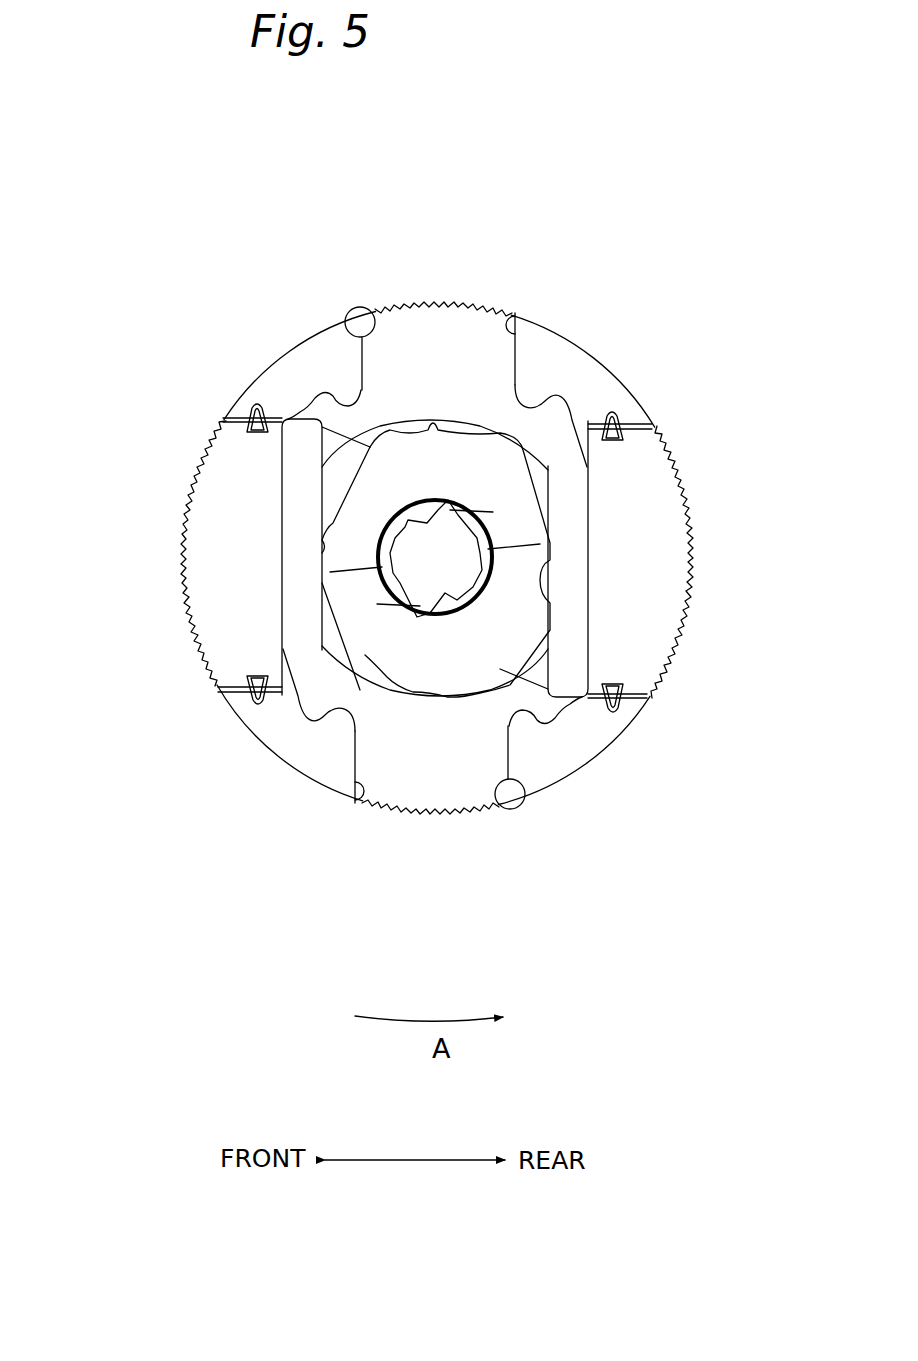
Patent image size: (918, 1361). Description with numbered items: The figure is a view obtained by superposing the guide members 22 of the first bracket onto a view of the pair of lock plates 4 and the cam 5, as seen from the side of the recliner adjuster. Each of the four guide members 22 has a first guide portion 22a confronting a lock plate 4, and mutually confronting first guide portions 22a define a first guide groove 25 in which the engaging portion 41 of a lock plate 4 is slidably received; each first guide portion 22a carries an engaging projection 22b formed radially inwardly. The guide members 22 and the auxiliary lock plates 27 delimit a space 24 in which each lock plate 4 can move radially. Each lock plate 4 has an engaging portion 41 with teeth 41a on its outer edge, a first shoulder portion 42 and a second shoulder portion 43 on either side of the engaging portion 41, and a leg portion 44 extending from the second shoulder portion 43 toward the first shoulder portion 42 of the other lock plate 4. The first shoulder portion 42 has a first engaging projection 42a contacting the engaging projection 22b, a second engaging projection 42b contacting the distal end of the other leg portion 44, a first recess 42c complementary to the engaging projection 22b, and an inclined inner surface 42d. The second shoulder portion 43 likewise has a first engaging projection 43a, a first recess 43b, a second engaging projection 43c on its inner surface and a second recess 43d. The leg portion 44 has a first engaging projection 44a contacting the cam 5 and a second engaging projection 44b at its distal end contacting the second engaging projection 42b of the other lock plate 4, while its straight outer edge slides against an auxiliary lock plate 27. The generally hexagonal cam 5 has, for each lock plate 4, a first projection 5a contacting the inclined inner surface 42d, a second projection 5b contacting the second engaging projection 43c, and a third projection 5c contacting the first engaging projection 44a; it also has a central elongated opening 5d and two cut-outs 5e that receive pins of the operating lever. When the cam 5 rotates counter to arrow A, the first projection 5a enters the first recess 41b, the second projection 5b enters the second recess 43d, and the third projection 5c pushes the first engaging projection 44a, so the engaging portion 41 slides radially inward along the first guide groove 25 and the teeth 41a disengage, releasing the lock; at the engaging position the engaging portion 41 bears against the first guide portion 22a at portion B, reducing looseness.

The lock plate 4 is at (372, 303).
The cam 5 is at (593, 487).
The first projection 5a is at (395, 445).
The second projection 5b is at (488, 445).
The third projection 5c is at (345, 548).
The elongated opening 5d is at (320, 577).
The cut-outs 5e is at (322, 600).
The guide member 22 is at (318, 320).
The first guide portion 22a is at (352, 308).
The engaging projection 22b is at (300, 370).
The space 24 is at (370, 497).
The first guide groove 25 is at (541, 313).
The auxiliary lock plate 27 is at (213, 652).
The engaging portion 41 is at (428, 342).
The teeth 41a is at (450, 300).
The first recess 41b is at (435, 420).
The first shoulder portion 42 is at (300, 410).
The first engaging projection 42a is at (330, 405).
The second engaging projection 42b is at (322, 477).
The first recess 42c is at (363, 400).
The inclined inner surface 42d is at (340, 487).
The second shoulder portion 43 is at (287, 727).
The first engaging projection 43a is at (330, 727).
The first recess 43b is at (360, 722).
The second engaging projection 43c is at (220, 686).
The second recess 43d is at (250, 698).
The leg portion 44 is at (293, 552).
The first engaging projection 44a is at (320, 512).
The second engaging projection 44b is at (322, 453).